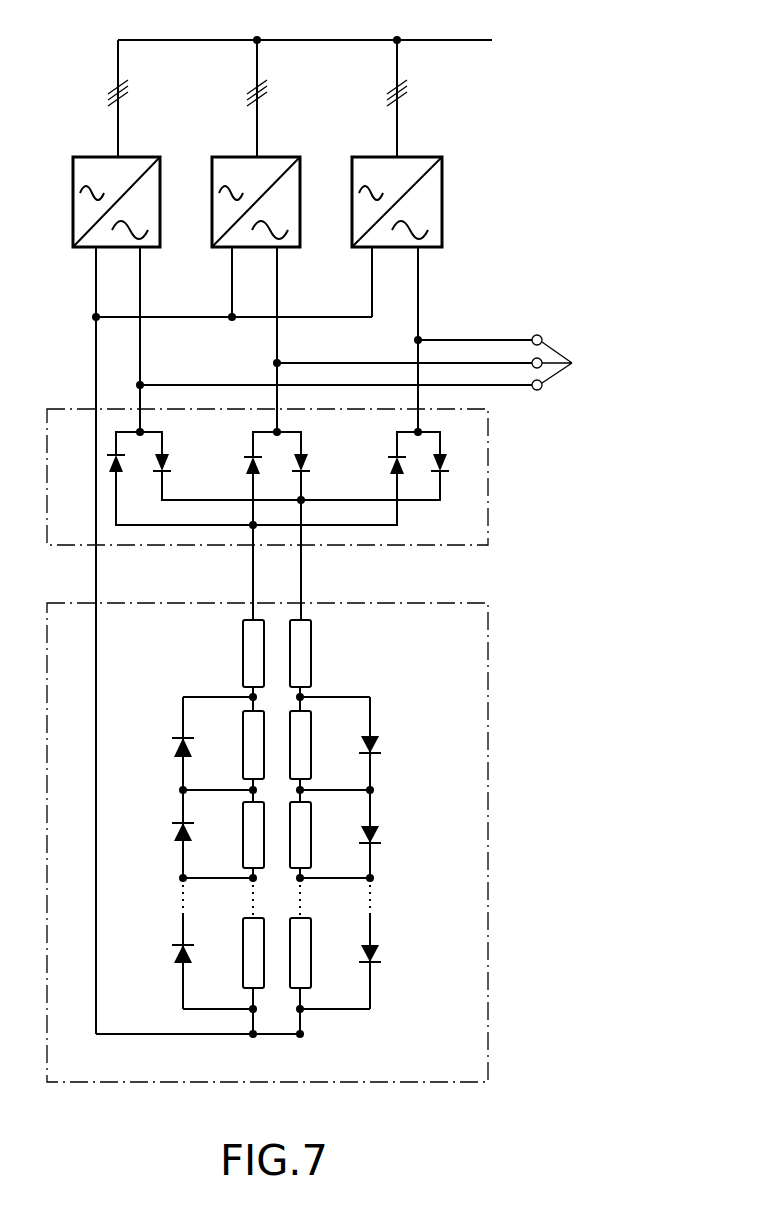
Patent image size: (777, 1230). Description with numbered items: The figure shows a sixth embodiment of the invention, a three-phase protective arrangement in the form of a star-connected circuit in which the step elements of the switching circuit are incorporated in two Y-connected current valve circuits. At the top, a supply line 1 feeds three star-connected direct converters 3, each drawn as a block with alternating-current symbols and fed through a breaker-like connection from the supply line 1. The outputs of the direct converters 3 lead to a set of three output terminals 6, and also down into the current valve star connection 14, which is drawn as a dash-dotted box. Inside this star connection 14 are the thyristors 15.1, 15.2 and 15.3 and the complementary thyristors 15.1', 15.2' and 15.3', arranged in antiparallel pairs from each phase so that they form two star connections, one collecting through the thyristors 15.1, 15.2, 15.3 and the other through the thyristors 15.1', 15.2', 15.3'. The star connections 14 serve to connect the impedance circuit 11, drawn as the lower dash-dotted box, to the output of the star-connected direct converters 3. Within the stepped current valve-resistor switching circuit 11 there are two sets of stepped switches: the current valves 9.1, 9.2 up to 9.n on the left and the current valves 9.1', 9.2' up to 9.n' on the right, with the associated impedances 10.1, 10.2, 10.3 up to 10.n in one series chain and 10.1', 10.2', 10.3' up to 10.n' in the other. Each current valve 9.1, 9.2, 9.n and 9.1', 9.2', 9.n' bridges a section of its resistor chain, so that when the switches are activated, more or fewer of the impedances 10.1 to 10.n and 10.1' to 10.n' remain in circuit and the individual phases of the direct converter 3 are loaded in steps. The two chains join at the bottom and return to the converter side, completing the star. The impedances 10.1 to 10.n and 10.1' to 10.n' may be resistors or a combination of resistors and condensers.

The supply line 1 is at (451, 40).
The direct converter 3 is at (424, 156).
The output terminals 6 is at (564, 362).
The Y-connected current valve circuit 14 is at (489, 465).
The stepped current valve-resistor switching circuit 11 is at (488, 730).
The thyristor 15.1 is at (129, 481).
The thyristor 15.1' is at (187, 450).
The thyristor 15.2 is at (232, 482).
The thyristor 15.2' is at (330, 450).
The thyristor 15.3 is at (373, 482).
The thyristor 15.3' is at (459, 483).
The impedance 10.1 is at (228, 653).
The impedance 10.1' is at (327, 653).
The impedance 10.2 is at (228, 744).
The impedance 10.2' is at (325, 742).
The impedance 10.3 is at (228, 832).
The impedance 10.3' is at (325, 832).
The impedance 10.n is at (228, 946).
The impedance 10.n' is at (326, 945).
The current valve 9.1 is at (157, 750).
The current valve 9.1' is at (394, 750).
The current valve 9.2 is at (157, 838).
The current valve 9.2' is at (399, 838).
The current valve 9.n is at (157, 962).
The current valve 9.n' is at (399, 962).